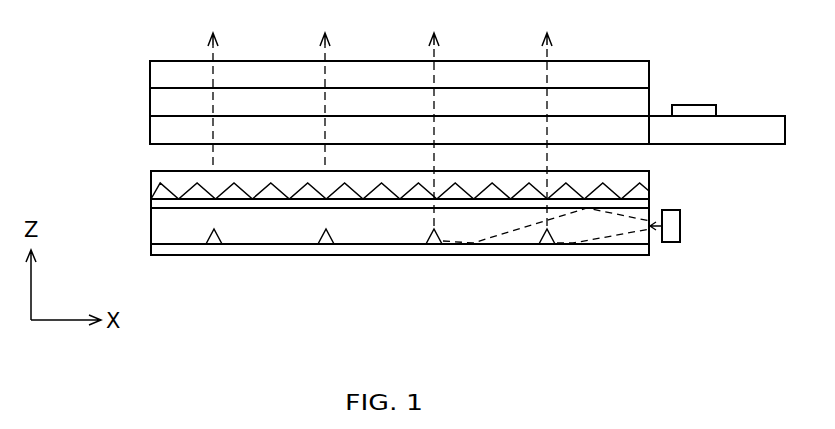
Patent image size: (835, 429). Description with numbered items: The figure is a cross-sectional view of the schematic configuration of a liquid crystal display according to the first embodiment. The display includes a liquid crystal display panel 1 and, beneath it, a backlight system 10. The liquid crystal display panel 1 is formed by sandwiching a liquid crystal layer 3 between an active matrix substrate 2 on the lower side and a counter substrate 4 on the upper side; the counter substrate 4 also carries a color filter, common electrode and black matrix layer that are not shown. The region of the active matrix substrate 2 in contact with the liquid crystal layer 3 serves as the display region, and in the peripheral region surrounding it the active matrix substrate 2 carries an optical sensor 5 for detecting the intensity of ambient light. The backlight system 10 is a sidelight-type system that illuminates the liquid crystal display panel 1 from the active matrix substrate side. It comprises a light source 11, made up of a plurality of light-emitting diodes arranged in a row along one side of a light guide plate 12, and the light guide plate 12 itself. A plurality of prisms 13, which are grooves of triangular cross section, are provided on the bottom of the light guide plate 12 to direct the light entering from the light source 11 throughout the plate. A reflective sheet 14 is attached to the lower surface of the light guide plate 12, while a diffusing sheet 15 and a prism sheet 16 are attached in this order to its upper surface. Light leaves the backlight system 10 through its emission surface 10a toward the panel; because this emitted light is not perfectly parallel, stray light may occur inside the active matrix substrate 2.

The liquid crystal display panel 1 is at (107, 53).
The active matrix substrate 2 is at (163, 130).
The liquid crystal layer 3 is at (163, 102).
The counter substrate 4 is at (163, 75).
The optical sensor 5 is at (700, 104).
The backlight system 10 is at (127, 172).
The emission surface 10a is at (152, 171).
The light source 11 is at (676, 222).
The light guide plate 12 is at (175, 232).
The prisms 13 is at (217, 234).
The reflective sheet 14 is at (290, 247).
The diffusing sheet 15 is at (647, 204).
The prism sheet 16 is at (647, 180).